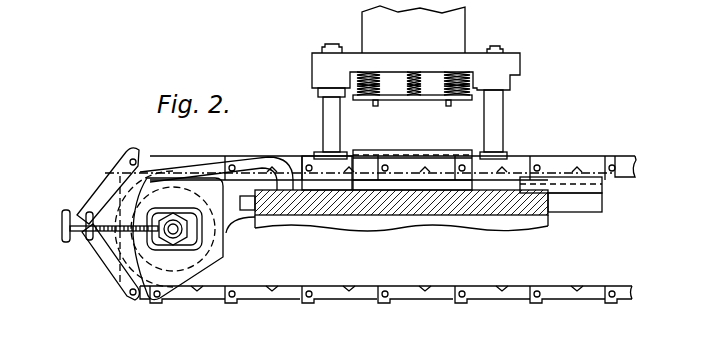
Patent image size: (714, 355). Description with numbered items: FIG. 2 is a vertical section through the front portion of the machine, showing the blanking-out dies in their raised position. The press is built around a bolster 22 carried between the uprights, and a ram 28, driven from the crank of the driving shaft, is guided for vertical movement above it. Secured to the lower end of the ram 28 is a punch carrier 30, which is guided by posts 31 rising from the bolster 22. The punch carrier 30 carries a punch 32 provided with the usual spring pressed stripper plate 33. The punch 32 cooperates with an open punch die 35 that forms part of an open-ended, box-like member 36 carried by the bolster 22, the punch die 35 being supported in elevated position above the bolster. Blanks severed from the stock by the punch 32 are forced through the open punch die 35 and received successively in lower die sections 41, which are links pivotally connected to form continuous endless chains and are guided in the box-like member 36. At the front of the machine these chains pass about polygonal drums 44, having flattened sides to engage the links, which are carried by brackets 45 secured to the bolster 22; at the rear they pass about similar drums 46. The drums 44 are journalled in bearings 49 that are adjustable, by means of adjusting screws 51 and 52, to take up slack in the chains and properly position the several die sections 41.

The bolster 22 is at (497, 210).
The ram 28 is at (460, 31).
The punch carrier 30 is at (470, 62).
The posts 31 is at (322, 113).
The punch 32 is at (396, 88).
The spring pressed stripper plate 33 is at (438, 103).
The open punch die 35 is at (478, 133).
The box-like member 36 is at (361, 168).
The lower die sections 41 is at (576, 160).
The drums 44 is at (222, 258).
The brackets 45 is at (228, 216).
The drums 46 is at (173, 285).
The bearings 49 is at (163, 250).
The adjusting screws 51 is at (63, 238).
The adjusting screws 52 is at (88, 238).